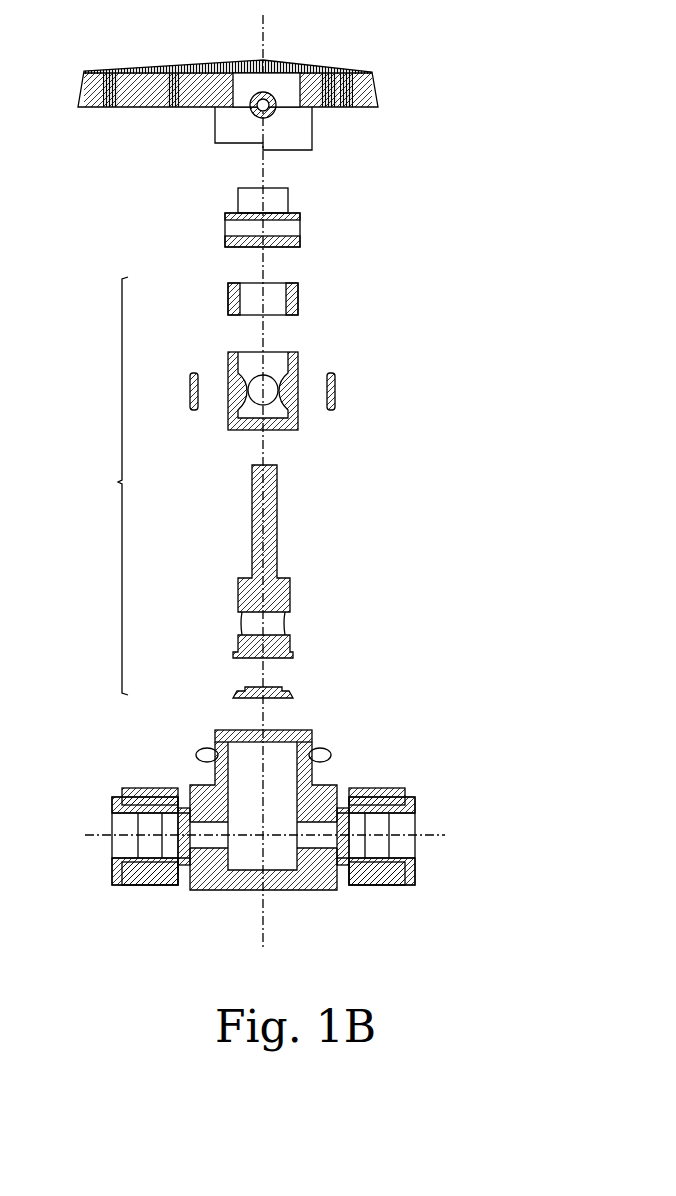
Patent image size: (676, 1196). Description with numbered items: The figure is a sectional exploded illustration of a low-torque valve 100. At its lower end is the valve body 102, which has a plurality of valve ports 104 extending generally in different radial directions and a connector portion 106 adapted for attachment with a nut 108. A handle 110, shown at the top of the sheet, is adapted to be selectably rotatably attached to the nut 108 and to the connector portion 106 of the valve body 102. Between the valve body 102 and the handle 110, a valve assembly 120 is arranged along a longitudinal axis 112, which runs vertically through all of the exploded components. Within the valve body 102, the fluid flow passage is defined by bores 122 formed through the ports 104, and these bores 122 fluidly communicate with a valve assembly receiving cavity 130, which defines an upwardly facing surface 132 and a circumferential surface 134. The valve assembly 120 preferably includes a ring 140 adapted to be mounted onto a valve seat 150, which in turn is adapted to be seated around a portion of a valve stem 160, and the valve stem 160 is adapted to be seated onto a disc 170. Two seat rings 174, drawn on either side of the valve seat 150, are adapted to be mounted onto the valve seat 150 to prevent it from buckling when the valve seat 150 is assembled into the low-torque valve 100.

The low-torque valve 100 is at (531, 367).
The valve body 102 is at (320, 797).
The valve ports 104 is at (150, 790).
The connector portion 106 is at (332, 752).
The nut 108 is at (300, 227).
The handle 110 is at (303, 129).
The longitudinal axis 112 is at (265, 32).
The valve assembly 120 is at (106, 486).
The bores 122 is at (112, 822).
The valve assembly receiving cavity 130 is at (248, 862).
The upwardly facing surface 132 is at (285, 868).
The circumferential surface 134 is at (242, 730).
The ring 140 is at (298, 300).
The valve seat 150 is at (298, 425).
The valve stem 160 is at (280, 525).
The disc 170 is at (293, 693).
The seat rings 174 is at (190, 392).